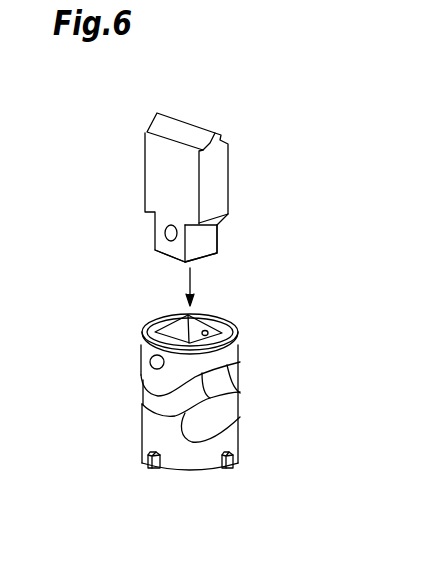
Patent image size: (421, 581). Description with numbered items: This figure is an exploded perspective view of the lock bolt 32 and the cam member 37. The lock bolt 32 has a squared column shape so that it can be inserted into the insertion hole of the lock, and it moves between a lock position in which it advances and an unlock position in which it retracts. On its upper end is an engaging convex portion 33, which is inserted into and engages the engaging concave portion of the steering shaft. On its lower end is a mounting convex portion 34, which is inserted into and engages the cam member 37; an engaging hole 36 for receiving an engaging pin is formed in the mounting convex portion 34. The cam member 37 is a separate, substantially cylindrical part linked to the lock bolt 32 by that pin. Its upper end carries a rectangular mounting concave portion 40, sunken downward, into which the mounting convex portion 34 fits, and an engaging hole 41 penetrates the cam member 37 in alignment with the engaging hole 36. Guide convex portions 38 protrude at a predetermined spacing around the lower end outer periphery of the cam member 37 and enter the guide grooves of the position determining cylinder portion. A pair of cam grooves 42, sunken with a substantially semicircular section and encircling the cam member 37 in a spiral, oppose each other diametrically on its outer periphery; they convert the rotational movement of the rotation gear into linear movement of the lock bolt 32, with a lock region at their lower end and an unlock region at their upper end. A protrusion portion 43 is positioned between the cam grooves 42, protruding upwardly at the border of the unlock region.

The lock bolt 32 is at (234, 137).
The engaging convex portion 33 is at (187, 116).
The mounting convex portion 34 is at (208, 238).
The engaging hole 36 is at (165, 234).
The cam member 37 is at (246, 325).
The guide convex portions 38 is at (227, 470).
The mounting concave portion 40 is at (167, 333).
The engaging hole 41 is at (149, 363).
The cam grooves 42 is at (150, 406).
The protrusion portion 43 is at (222, 404).